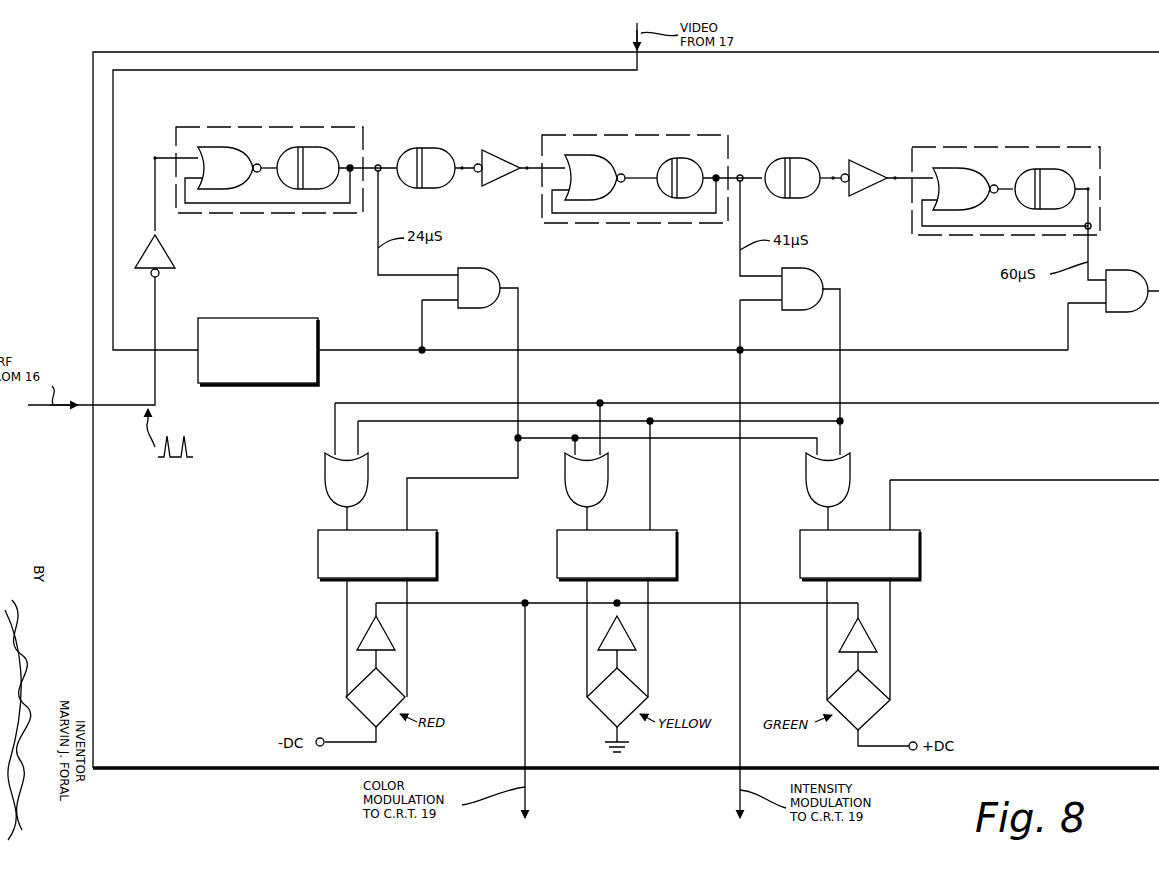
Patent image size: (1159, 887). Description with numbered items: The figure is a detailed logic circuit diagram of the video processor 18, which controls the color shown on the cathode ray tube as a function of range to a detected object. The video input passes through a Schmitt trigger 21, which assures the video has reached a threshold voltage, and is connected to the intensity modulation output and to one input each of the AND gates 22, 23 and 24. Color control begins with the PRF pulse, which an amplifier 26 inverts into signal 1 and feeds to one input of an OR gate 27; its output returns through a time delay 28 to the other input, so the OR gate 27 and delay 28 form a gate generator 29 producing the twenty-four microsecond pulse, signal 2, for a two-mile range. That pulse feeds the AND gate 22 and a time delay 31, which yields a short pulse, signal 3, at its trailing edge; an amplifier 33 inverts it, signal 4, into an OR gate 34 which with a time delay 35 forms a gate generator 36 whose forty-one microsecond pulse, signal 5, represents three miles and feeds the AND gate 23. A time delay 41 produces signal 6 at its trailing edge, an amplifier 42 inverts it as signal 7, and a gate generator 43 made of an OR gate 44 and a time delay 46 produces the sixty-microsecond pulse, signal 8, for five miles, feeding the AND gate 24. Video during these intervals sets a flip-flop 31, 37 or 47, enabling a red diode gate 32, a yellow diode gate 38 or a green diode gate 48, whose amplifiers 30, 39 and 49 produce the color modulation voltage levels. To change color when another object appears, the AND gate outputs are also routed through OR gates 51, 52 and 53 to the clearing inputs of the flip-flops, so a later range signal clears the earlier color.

The video processor 18 is at (93, 155).
The inverted PRF signal 1 is at (155, 150).
The gate generator output pulse 2 is at (378, 162).
The trailing-edge pulse 3 is at (462, 162).
The inverted trailing-edge pulse 4 is at (527, 162).
The gate generator output pulse 5 is at (740, 172).
The trailing-edge pulse 6 is at (833, 172).
The inverted trailing-edge pulse 7 is at (895, 172).
The gate generator output pulse 8 is at (1088, 182).
The Schmitt trigger 21 is at (250, 318).
The AND gate 22 is at (488, 296).
The AND gate 23 is at (812, 297).
The AND gate 24 is at (1135, 299).
The amplifier 26 is at (172, 250).
The OR gate 27 is at (236, 176).
The time delay 28 is at (332, 176).
The gate generator 29 is at (244, 127).
The amplifier 30 is at (366, 636).
The time delay / flip-flop 31 is at (448, 176).
The red diode gate 32 is at (387, 706).
The amplifier 33 is at (508, 184).
The OR gate 34 is at (602, 186).
The time delay 35 is at (706, 186).
The gate generator 36 is at (622, 135).
The flip-flop 37 is at (557, 545).
The yellow diode gate 38 is at (628, 706).
The amplifier 39 is at (607, 636).
The time delay 41 is at (818, 186).
The amplifier 42 is at (876, 190).
The gate generator 43 is at (972, 147).
The OR gate 44 is at (969, 197).
The time delay 46 is at (1067, 197).
The flip-flop 47 is at (800, 545).
The green diode gate 48 is at (869, 709).
The amplifier 49 is at (850, 638).
The OR gate 51 is at (358, 483).
The OR gate 52 is at (599, 483).
The OR gate 53 is at (840, 483).